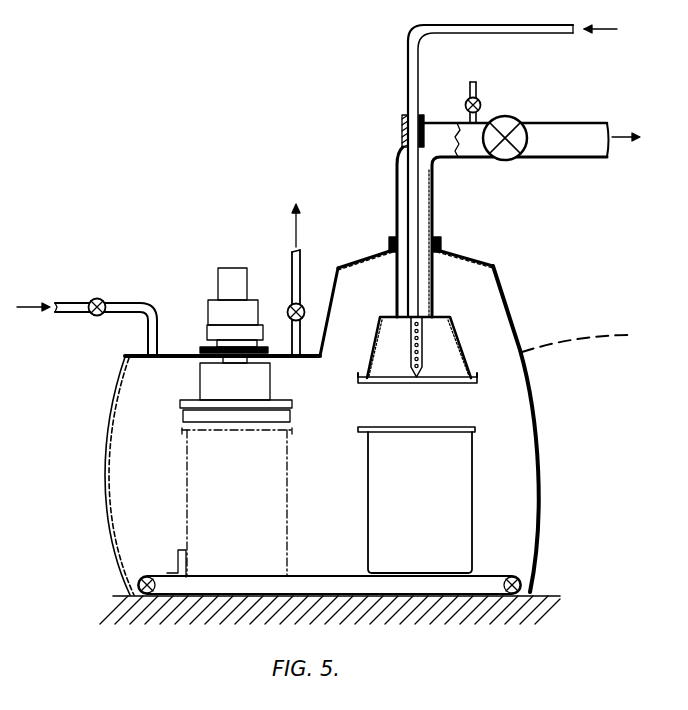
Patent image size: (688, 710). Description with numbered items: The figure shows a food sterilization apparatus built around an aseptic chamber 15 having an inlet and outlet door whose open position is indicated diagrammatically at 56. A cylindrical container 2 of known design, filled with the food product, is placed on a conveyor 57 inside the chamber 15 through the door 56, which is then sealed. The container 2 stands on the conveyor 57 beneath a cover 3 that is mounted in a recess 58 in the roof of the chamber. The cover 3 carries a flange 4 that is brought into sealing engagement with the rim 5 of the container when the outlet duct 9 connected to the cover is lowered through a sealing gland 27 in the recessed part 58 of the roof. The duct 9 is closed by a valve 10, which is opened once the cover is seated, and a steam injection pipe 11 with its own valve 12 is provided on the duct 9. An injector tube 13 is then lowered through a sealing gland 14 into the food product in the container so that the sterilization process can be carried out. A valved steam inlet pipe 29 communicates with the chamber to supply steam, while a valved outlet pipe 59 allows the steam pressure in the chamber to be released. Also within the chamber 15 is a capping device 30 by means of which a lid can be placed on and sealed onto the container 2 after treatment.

The cylindrical container 2 is at (473, 500).
The cover 3 is at (463, 343).
The flange 4 is at (474, 377).
The rim 5 is at (476, 430).
The outlet duct 9 is at (433, 195).
The valve 10 is at (507, 150).
The steam injection pipe 11 is at (474, 82).
The valve 12 is at (480, 108).
The injector tube 13 is at (407, 62).
The sealing gland 14 is at (402, 122).
The aseptic chamber 15 is at (540, 532).
The sealing gland 27 is at (392, 240).
The valved steam inlet pipe 29 is at (146, 274).
The capping device 30 is at (200, 383).
The door 56 is at (607, 334).
The conveyor 57 is at (533, 577).
The recess 58 is at (503, 283).
The valved outlet pipe 59 is at (291, 262).